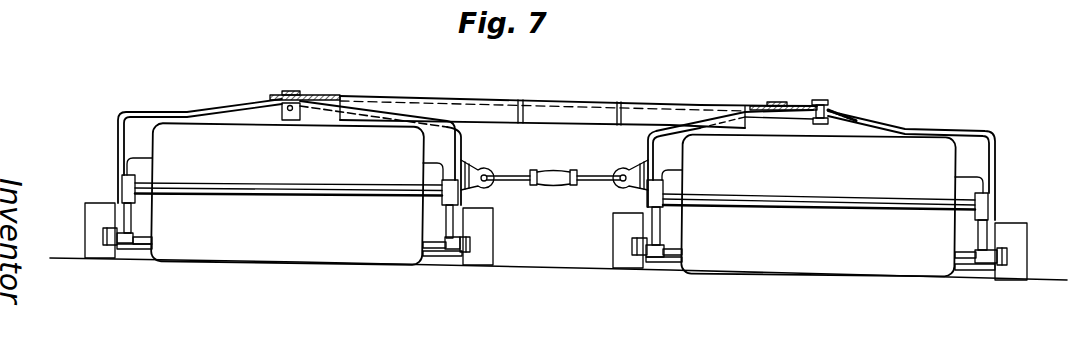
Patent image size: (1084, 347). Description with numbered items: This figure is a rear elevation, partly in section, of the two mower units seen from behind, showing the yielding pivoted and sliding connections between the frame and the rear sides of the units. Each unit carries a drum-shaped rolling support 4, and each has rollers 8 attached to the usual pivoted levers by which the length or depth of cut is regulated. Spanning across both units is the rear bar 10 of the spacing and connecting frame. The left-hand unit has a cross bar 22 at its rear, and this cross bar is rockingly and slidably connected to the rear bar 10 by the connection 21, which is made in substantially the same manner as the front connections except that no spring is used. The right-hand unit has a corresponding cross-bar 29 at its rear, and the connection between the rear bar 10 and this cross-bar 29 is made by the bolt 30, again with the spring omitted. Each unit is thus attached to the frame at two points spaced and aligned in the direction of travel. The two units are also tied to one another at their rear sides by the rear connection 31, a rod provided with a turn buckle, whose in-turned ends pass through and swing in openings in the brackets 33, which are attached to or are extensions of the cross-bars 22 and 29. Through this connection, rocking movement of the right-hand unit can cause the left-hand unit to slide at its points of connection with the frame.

The rolling support 4 is at (315, 248).
The rollers 8 is at (98, 252).
The rear bar 10 is at (575, 102).
The connection 21 is at (290, 113).
The cross bar 22 is at (212, 110).
The cross-bar 29 is at (907, 129).
The bolt 30 is at (826, 102).
The rear connection 31 is at (580, 172).
The brackets 33 is at (476, 167).